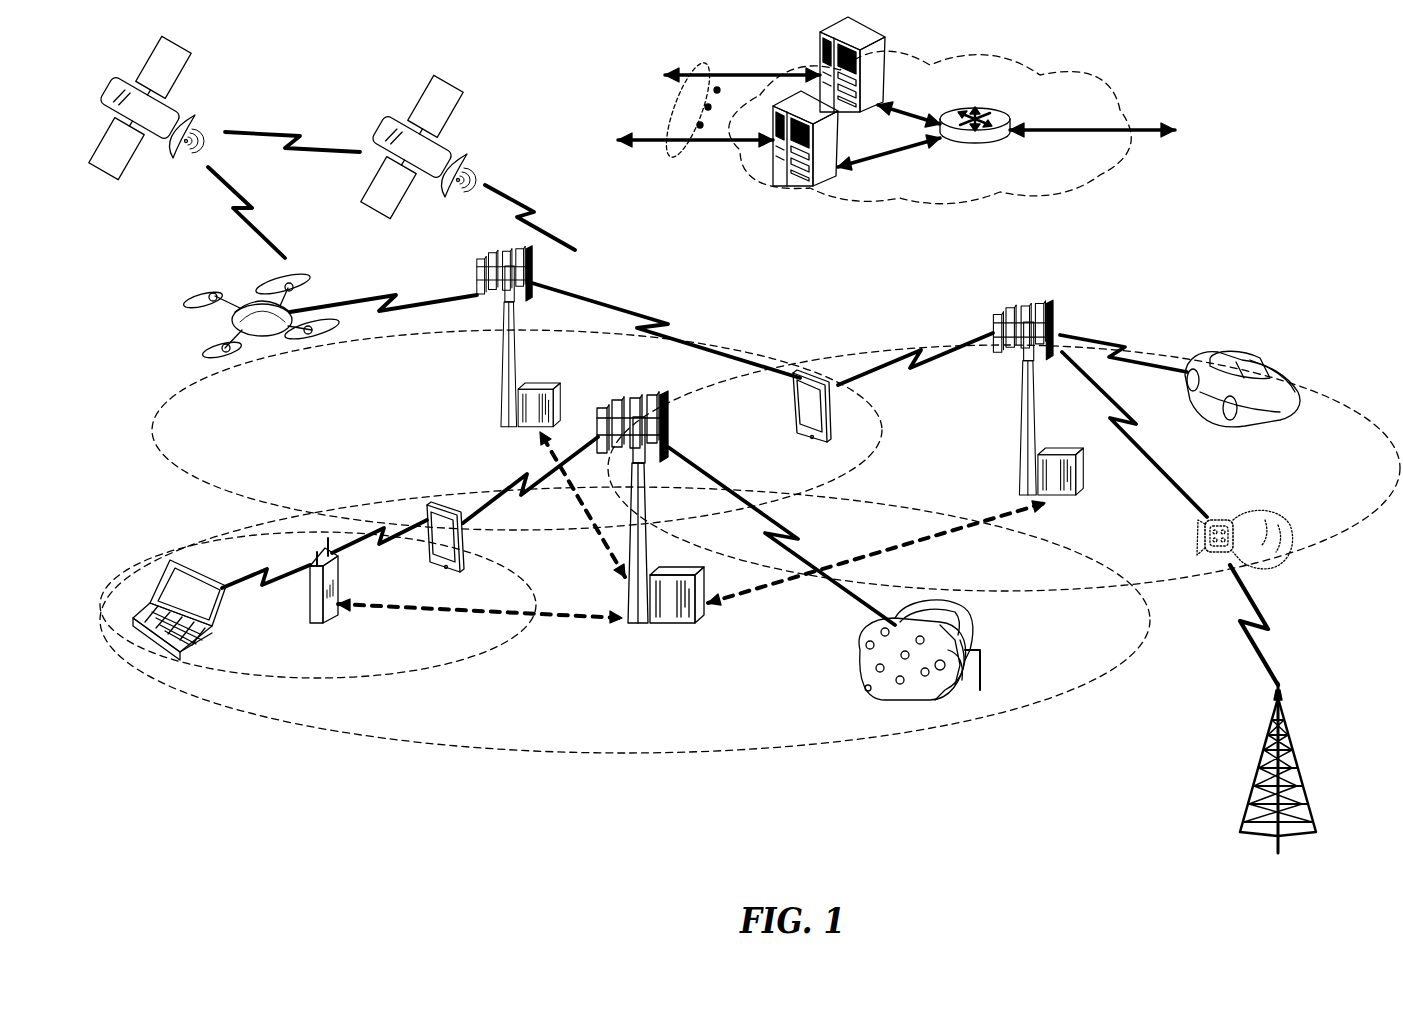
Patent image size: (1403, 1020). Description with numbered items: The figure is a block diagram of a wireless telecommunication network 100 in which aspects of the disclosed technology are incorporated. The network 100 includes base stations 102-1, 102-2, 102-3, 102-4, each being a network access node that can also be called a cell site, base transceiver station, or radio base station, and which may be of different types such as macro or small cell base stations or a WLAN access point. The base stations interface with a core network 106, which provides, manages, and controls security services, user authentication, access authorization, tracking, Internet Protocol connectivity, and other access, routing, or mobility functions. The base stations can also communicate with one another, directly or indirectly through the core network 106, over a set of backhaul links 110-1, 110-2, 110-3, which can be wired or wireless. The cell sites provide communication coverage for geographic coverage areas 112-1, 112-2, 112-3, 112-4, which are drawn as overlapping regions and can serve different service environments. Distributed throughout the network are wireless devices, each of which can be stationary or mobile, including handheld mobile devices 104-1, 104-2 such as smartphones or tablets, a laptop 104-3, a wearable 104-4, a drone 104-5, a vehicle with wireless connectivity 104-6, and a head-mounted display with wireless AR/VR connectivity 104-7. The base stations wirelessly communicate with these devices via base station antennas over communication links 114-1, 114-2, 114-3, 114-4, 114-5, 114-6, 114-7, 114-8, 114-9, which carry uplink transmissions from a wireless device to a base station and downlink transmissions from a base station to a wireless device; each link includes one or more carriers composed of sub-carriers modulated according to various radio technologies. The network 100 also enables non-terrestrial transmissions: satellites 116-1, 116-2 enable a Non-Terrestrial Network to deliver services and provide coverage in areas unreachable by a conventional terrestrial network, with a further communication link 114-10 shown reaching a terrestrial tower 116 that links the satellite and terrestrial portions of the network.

The wireless telecommunication network 100 is at (1312, 116).
The base station 102-1 is at (636, 626).
The base station 102-2 is at (500, 378).
The base station 102-3 is at (1020, 415).
The base station 102-4 is at (310, 604).
The handheld mobile device 104-1 is at (462, 552).
The handheld mobile device 104-2 is at (790, 410).
The laptop 104-3 is at (190, 656).
The wearable 104-4 is at (1226, 518).
The drone 104-5 is at (270, 344).
The vehicle with wireless connectivity 104-6 is at (1262, 366).
The head-mounted display 104-7 is at (972, 636).
The core network 106 is at (1008, 197).
The backhaul link 110-1 is at (383, 610).
The backhaul link 110-2 is at (938, 537).
The backhaul link 110-3 is at (600, 532).
The geographic coverage area 112-1 is at (562, 752).
The geographic coverage area 112-2 is at (443, 664).
The geographic coverage area 112-3 is at (218, 486).
The geographic coverage area 112-4 is at (1320, 410).
The communication link 114-1 is at (790, 540).
The communication link 114-2 is at (518, 488).
The communication link 114-3 is at (235, 590).
The communication link 114-4 is at (375, 555).
The communication link 114-5 is at (385, 294).
The communication link 114-6 is at (910, 352).
The communication link 114-7 is at (670, 338).
The communication link 114-8 is at (1140, 452).
The communication link 114-9 is at (1113, 345).
The wireless communication link 114-10 is at (1262, 620).
The terrestrial radio tower 116 is at (1296, 752).
The satellite 116-1 is at (195, 115).
The satellite 116-2 is at (467, 154).